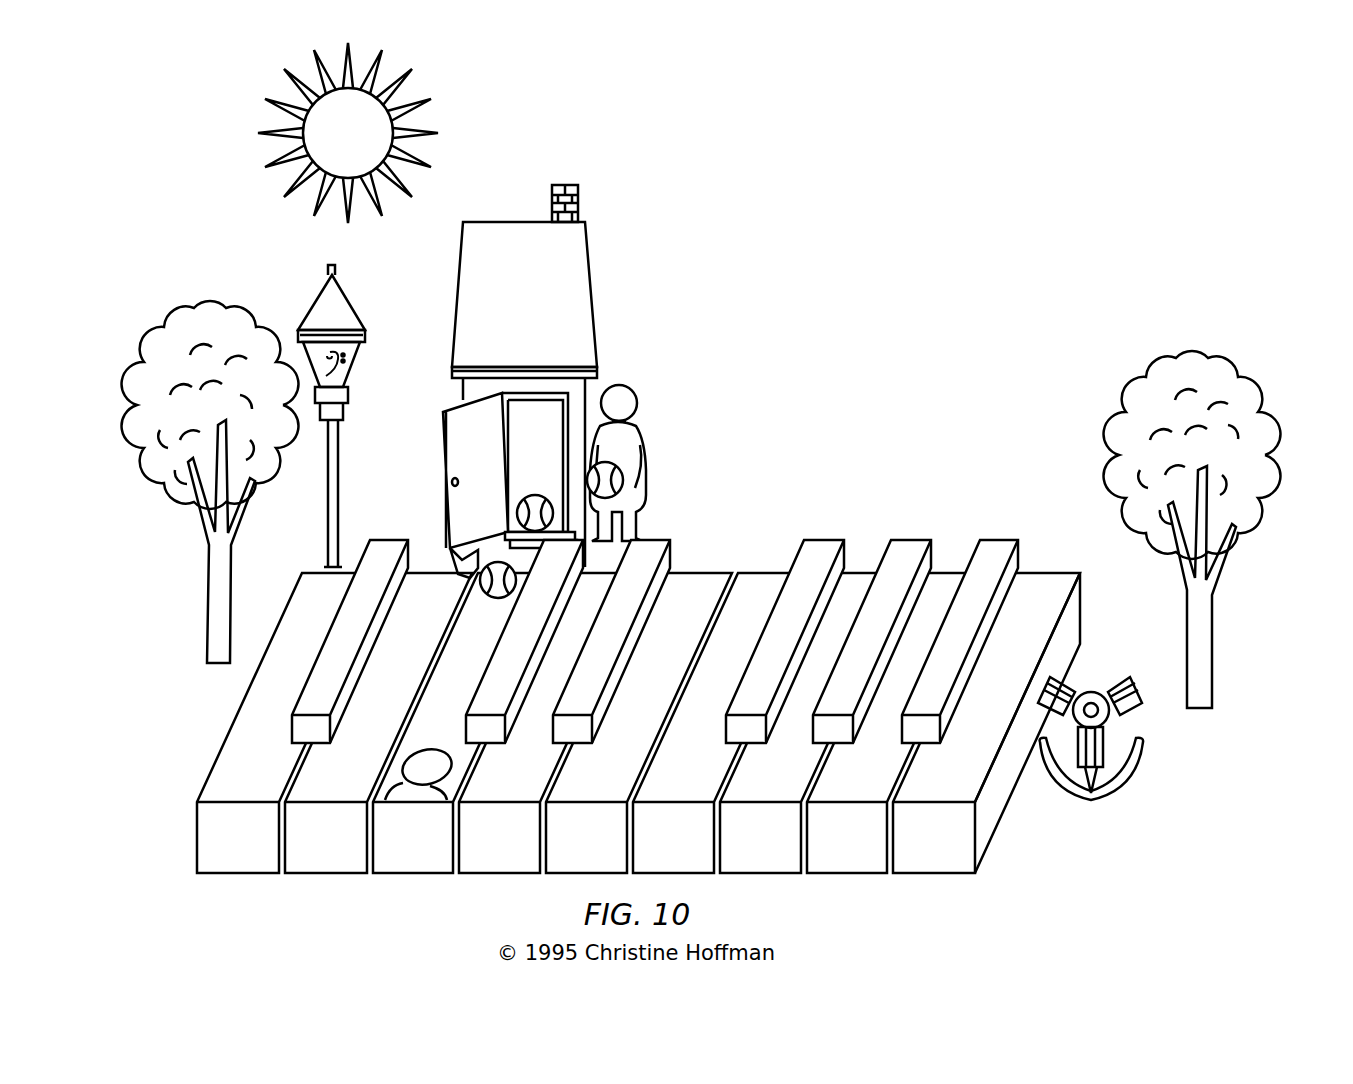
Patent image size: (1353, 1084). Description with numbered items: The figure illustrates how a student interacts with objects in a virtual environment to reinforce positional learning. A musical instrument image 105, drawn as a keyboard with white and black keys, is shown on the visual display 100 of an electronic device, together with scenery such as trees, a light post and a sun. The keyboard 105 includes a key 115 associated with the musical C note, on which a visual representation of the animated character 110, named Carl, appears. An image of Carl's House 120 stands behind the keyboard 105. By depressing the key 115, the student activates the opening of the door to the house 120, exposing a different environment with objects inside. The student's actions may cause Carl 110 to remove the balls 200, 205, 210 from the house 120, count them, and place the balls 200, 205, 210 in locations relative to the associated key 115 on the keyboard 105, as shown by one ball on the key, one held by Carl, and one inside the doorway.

The visual display 100 is at (997, 172).
The musical instrument image 105 is at (1015, 834).
The animated character 110 is at (640, 397).
The key 115 is at (412, 874).
The Carl's House 120 is at (595, 237).
The ball 200 is at (472, 588).
The ball 205 is at (628, 470).
The ball 210 is at (517, 504).